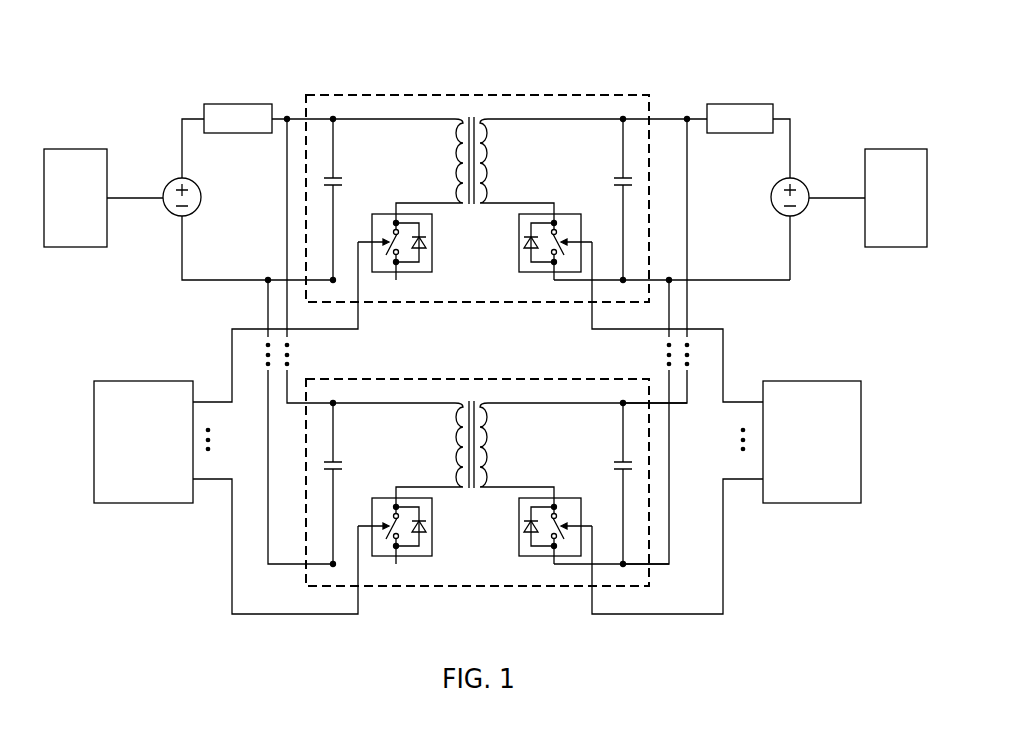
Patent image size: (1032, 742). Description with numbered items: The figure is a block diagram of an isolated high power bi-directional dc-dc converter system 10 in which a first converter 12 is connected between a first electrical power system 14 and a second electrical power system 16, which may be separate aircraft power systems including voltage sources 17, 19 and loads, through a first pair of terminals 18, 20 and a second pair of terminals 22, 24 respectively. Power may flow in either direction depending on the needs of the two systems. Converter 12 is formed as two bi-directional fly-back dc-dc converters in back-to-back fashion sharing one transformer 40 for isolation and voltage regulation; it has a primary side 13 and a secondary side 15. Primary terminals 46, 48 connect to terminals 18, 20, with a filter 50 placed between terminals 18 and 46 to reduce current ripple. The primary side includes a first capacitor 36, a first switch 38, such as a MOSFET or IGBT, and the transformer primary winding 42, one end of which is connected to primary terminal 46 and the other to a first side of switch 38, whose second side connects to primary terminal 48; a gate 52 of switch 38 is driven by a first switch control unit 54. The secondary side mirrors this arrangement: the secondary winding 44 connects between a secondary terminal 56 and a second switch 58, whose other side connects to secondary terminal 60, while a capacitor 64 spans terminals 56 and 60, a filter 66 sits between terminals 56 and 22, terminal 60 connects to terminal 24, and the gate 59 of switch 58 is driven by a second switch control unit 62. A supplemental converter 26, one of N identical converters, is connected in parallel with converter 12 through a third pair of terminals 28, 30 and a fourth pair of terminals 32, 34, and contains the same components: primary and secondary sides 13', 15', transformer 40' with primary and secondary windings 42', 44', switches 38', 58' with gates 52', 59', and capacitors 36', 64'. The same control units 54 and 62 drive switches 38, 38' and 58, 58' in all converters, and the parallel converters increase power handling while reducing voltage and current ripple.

The converter system 10 is at (112, 117).
The first converter 12 is at (598, 95).
The primary side 13 is at (407, 75).
The first electrical power system 14 is at (66, 149).
The secondary side 15 is at (556, 75).
The second electrical power system 16 is at (907, 149).
The voltage source 17 is at (201, 197).
The first terminal 18 is at (181, 139).
The voltage source 19 is at (771, 197).
The first terminal 20 is at (181, 252).
The second terminal 22 is at (791, 139).
The second terminal 24 is at (791, 252).
The supplemental converter 26 is at (598, 379).
The third terminal 28 is at (267, 310).
The third terminal 30 is at (288, 313).
The fourth terminal 32 is at (688, 310).
The fourth terminal 34 is at (668, 313).
The first capacitor 36 is at (343, 200).
The first switch 38 is at (413, 227).
The transformer 40 is at (479, 122).
The primary winding 42 is at (398, 166).
The secondary winding 44 is at (593, 166).
The primary terminal 46 is at (292, 118).
The primary terminal 48 is at (295, 279).
The filter 50 is at (228, 104).
The gate 52 is at (369, 236).
The first switch control unit 54 is at (128, 381).
The secondary terminal 56 is at (672, 118).
The second switch 58 is at (535, 227).
The gate 59 is at (582, 236).
The secondary terminal 60 is at (665, 279).
The second switch control unit 62 is at (832, 381).
The capacitor 64 is at (610, 200).
The filter 66 is at (752, 104).
The primary side 13' is at (408, 359).
The secondary side 15' is at (557, 359).
The capacitor 36' is at (345, 484).
The switch 38' is at (413, 511).
The transformer 40' is at (480, 406).
The primary winding 42' is at (398, 450).
The secondary winding 44' is at (583, 450).
The gate 52' is at (368, 520).
The switch 58' is at (536, 511).
The gate 59' is at (583, 520).
The capacitor 64' is at (611, 484).